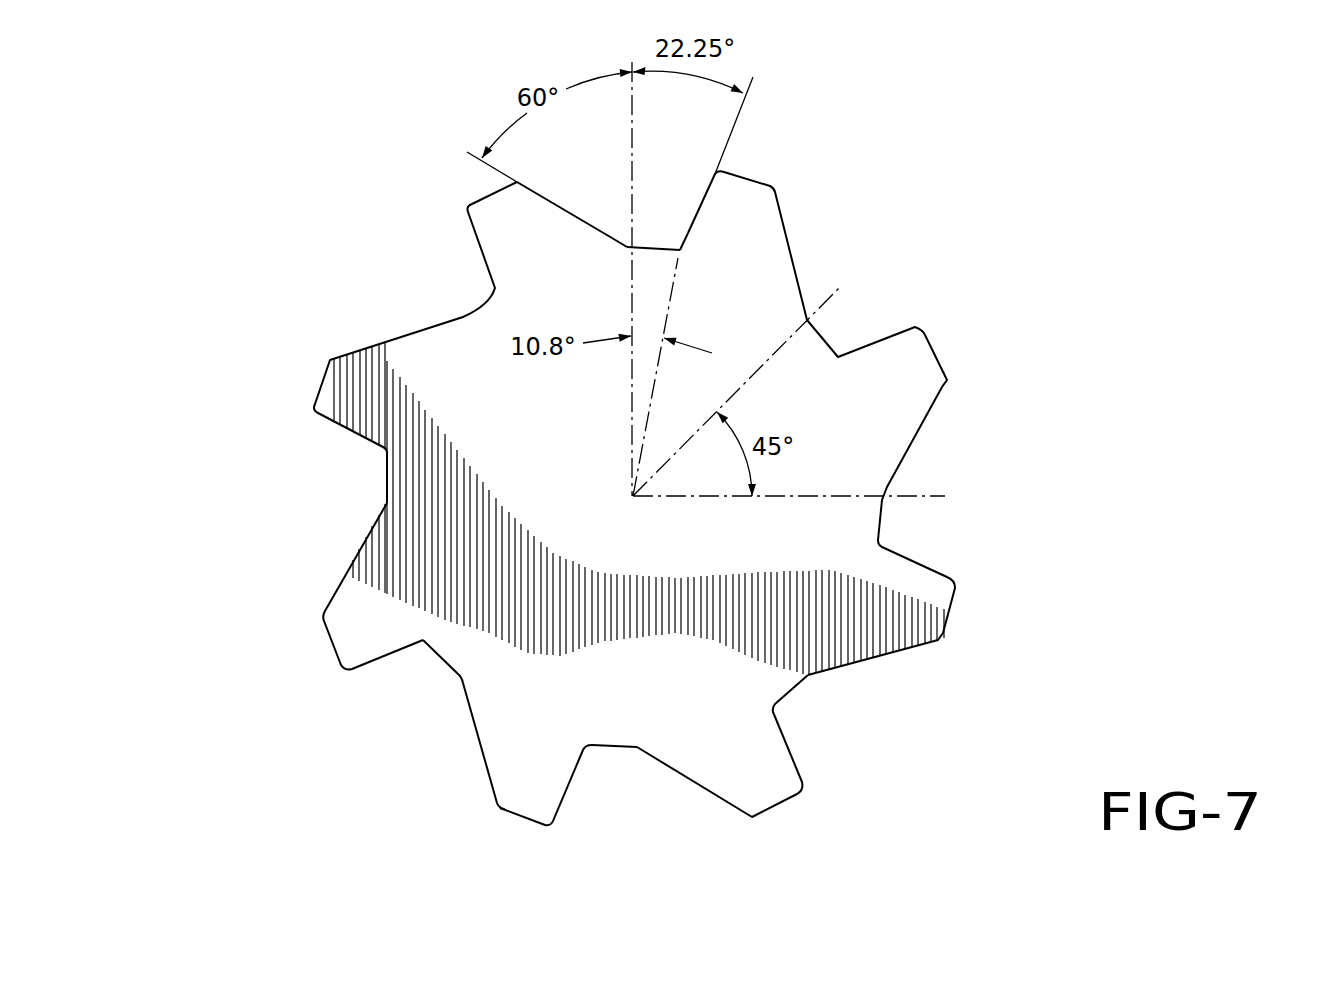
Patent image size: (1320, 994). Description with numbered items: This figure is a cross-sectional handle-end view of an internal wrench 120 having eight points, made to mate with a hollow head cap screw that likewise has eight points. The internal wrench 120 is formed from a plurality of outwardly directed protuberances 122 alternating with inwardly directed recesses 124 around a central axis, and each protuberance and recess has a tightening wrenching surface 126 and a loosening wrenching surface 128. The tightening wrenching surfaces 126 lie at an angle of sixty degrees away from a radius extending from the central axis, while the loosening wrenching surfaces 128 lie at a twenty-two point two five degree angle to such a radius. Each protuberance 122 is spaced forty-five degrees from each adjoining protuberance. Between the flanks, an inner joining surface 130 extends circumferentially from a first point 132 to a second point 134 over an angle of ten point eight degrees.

The internal wrench 120 is at (270, 194).
The outwardly directed protuberance 122 is at (353, 635).
The inwardly directed recess 124 is at (812, 702).
The tightening wrenching surface 126 is at (475, 738).
The loosening wrenching surface 128 is at (572, 785).
The inner joining surface 130 is at (653, 252).
The point 132 is at (626, 247).
The point 134 is at (682, 252).